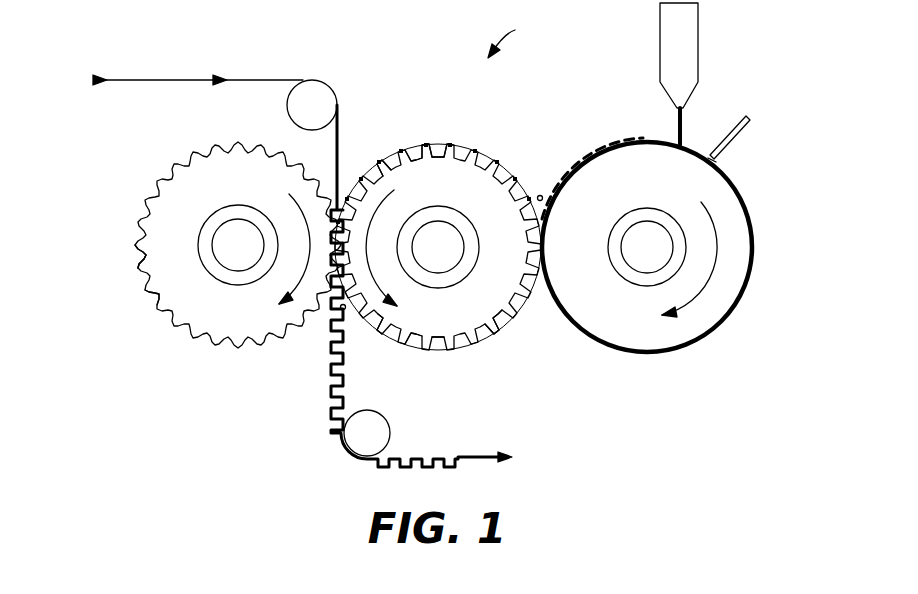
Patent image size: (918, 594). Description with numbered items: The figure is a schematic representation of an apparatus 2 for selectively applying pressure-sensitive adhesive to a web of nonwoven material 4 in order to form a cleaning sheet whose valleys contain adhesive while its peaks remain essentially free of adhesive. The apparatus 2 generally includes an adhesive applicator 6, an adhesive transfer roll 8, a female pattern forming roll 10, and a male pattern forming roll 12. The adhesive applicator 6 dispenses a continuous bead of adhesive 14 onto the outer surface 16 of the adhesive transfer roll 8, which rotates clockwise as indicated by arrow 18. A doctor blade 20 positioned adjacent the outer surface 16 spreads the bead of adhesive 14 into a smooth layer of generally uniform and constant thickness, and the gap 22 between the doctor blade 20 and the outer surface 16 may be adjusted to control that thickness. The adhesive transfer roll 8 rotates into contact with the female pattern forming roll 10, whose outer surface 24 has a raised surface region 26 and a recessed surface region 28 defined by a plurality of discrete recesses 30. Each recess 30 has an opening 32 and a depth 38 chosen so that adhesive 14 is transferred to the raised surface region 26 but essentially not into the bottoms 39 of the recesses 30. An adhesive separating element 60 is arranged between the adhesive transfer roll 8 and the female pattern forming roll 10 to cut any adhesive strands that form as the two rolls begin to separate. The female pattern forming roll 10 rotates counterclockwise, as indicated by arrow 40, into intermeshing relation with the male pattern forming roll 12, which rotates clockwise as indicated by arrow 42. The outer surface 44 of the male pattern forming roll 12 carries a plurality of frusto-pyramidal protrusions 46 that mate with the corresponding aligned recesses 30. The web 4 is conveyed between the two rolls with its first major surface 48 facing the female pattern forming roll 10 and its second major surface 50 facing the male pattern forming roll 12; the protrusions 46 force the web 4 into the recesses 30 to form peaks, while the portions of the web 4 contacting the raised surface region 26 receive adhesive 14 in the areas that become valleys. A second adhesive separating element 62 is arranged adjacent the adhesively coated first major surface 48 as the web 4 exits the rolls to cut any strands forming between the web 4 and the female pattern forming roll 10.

The apparatus 2 is at (510, 34).
The web of nonwoven material 4 is at (168, 80).
The adhesive applicator 6 is at (700, 35).
The adhesive transfer roll 8 is at (730, 212).
The female pattern forming roll 10 is at (463, 327).
The male pattern forming roll 12 is at (225, 330).
The adhesive 14 is at (682, 123).
The outer surface of the adhesive transfer roll 16 is at (598, 155).
The arrow 18 is at (708, 287).
The doctor blade 20 is at (750, 127).
The gap 22 is at (712, 160).
The outer surface of the female pattern forming roll 24 is at (392, 150).
The raised surface region 26 is at (517, 308).
The recessed surface region 28 is at (450, 343).
The recesses 30 is at (376, 332).
The opening of the recess 32 is at (343, 300).
The depth of the recess 38 is at (432, 345).
The bottoms of the recesses 39 is at (415, 150).
The arrow 40 is at (398, 190).
The arrow 42 is at (287, 203).
The outer surface of the male pattern forming roll 44 is at (143, 293).
The protrusions 46 is at (133, 253).
The first major surface of the web 48 is at (340, 125).
The second major surface of the web 50 is at (335, 170).
The adhesive separating element 60 is at (541, 190).
The second adhesive separating element 62 is at (338, 313).